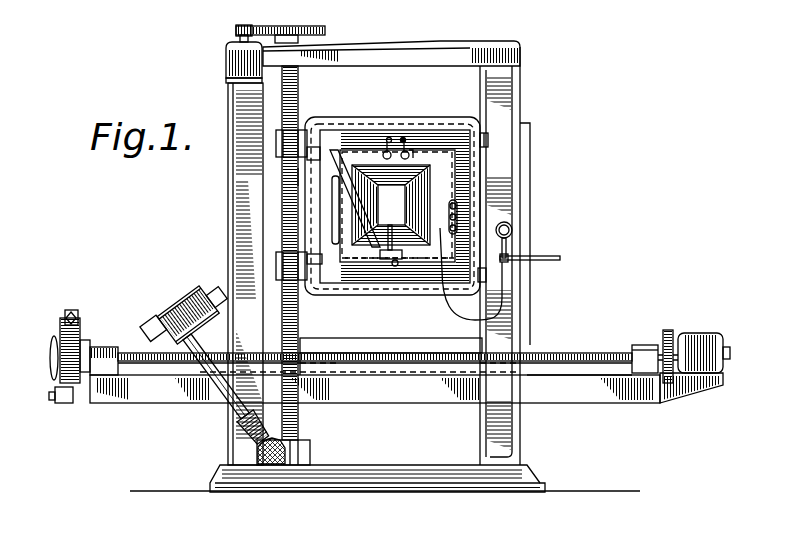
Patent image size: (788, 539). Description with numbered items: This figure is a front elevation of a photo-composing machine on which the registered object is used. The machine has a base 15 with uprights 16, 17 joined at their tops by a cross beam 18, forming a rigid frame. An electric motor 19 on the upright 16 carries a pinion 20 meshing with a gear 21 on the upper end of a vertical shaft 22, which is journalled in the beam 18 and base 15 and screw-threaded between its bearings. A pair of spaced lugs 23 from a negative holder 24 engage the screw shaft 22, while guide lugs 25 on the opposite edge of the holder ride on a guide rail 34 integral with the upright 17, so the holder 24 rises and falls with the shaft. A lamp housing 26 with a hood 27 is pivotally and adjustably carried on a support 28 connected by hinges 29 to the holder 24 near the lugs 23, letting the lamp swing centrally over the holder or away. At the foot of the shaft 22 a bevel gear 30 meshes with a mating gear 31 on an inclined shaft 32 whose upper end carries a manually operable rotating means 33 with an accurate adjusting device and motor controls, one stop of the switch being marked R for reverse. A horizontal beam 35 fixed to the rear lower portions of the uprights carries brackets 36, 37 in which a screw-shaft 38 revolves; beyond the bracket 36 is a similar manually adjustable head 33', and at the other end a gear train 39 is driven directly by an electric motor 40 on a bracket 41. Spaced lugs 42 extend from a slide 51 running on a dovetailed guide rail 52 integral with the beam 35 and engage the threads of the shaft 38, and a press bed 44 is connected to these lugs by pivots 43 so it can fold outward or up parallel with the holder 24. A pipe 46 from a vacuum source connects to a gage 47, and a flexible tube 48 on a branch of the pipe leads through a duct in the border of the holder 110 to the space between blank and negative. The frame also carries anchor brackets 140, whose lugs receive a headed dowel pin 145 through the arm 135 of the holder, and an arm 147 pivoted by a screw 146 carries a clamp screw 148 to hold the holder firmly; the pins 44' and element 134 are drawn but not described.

The base 15 is at (405, 480).
The upright 16 is at (243, 197).
The upright 17 is at (497, 100).
The cross beam 18 is at (431, 52).
The electric motor 19 is at (226, 77).
The pinion 20 is at (236, 32).
The gear 21 is at (325, 31).
The vertical shaft 22 is at (282, 215).
The spaced lugs 23 is at (276, 140).
The negative holder 24 is at (338, 288).
The guide lugs 25 is at (488, 140).
The lamp housing 26 is at (391, 205).
The hood 27 is at (391, 205).
The support 28 is at (364, 262).
The hinges 29 is at (305, 158).
The bevel gear 30 is at (297, 468).
The mating gear 31 is at (270, 465).
The inclined shaft 32 is at (236, 402).
The manually operable rotating means 33 is at (181, 309).
The manually adjustable head 33' is at (54, 346).
The guide rail 34 is at (487, 196).
The horizontal beam 35 is at (178, 392).
The bracket 36 is at (103, 347).
The bracket 37 is at (644, 346).
The screw-shaft 38 is at (142, 364).
The gear train 39 is at (673, 339).
The electric motor 40 is at (705, 341).
The bracket 41 is at (682, 392).
The spaced lugs 42 is at (309, 353).
The pivots 43 is at (308, 353).
The press bed 44 is at (391, 379).
The guide rod 44' is at (245, 177).
The pipe 46 is at (560, 258).
The gage 47 is at (512, 230).
The flexible tube 48 is at (503, 310).
The slide 51 is at (428, 363).
The dovetailed guide rail 52 is at (570, 376).
The holder 110 is at (418, 255).
The nozzle 134 is at (385, 151).
The arm 135 is at (387, 148).
The anchor brackets 140 is at (403, 137).
The headed dowel pin 145 is at (389, 137).
The screw 146 is at (405, 148).
The arm 147 is at (408, 148).
The clamp screw 148 is at (413, 152).
The reverse stop R is at (52, 395).